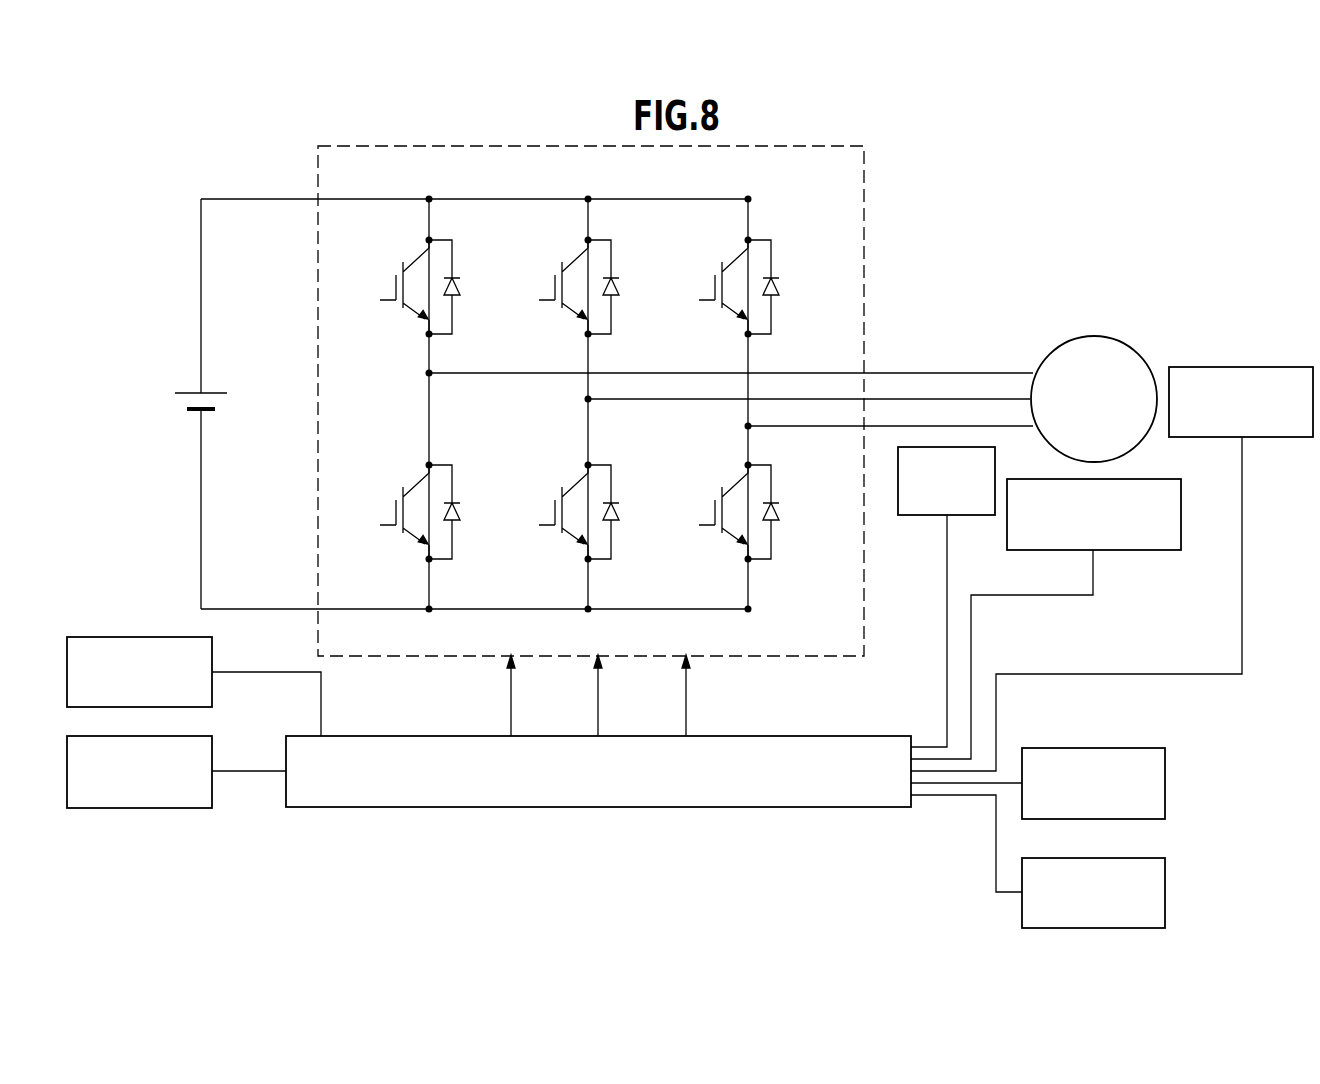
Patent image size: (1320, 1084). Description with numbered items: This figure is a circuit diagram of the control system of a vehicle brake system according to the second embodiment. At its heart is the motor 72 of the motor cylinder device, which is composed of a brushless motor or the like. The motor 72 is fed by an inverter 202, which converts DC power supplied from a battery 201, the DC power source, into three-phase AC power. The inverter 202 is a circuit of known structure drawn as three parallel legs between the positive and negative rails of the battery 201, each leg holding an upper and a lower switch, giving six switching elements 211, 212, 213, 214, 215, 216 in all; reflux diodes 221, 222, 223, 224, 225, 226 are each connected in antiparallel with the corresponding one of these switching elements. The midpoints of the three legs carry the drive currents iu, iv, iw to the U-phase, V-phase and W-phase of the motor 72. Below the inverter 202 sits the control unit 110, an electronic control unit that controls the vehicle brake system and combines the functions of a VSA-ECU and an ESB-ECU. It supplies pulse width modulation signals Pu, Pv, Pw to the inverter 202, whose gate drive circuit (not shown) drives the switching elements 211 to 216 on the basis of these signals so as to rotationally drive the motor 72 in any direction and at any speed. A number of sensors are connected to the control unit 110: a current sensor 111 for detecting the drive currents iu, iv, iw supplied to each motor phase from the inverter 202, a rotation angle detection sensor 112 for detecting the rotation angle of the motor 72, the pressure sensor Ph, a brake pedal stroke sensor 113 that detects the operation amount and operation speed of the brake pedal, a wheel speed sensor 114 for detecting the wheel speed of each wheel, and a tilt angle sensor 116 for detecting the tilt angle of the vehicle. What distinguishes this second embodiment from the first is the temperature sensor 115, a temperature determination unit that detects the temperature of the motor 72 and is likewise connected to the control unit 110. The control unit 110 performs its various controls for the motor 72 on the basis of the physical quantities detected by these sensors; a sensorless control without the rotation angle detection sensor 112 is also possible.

The inverter 202 is at (866, 190).
The battery 201 is at (190, 392).
The switching element 211 is at (402, 312).
The switching element 212 is at (402, 535).
The switching element 213 is at (561, 312).
The switching element 214 is at (561, 535).
The switching element 215 is at (721, 312).
The switching element 216 is at (721, 535).
The reflux diode 221 is at (458, 284).
The reflux diode 222 is at (458, 507).
The reflux diode 223 is at (617, 284).
The reflux diode 224 is at (617, 507).
The reflux diode 225 is at (777, 284).
The reflux diode 226 is at (777, 507).
The motor 72 is at (1094, 336).
The control unit 110 is at (600, 808).
The current sensor 111 is at (922, 517).
The rotation angle detection sensor 112 is at (1121, 479).
The brake pedal stroke sensor 113 is at (1121, 750).
The wheel speed sensor 114 is at (142, 636).
The temperature sensor 115 is at (1250, 367).
The tilt angle sensor 116 is at (140, 809).
The pressure sensor Ph is at (1114, 857).
The PWM signal Pu is at (523, 695).
The PWM signal Pv is at (611, 695).
The PWM signal Pw is at (701, 695).
The drive current iu is at (731, 361).
The drive current iv is at (809, 387).
The drive current iw is at (890, 416).